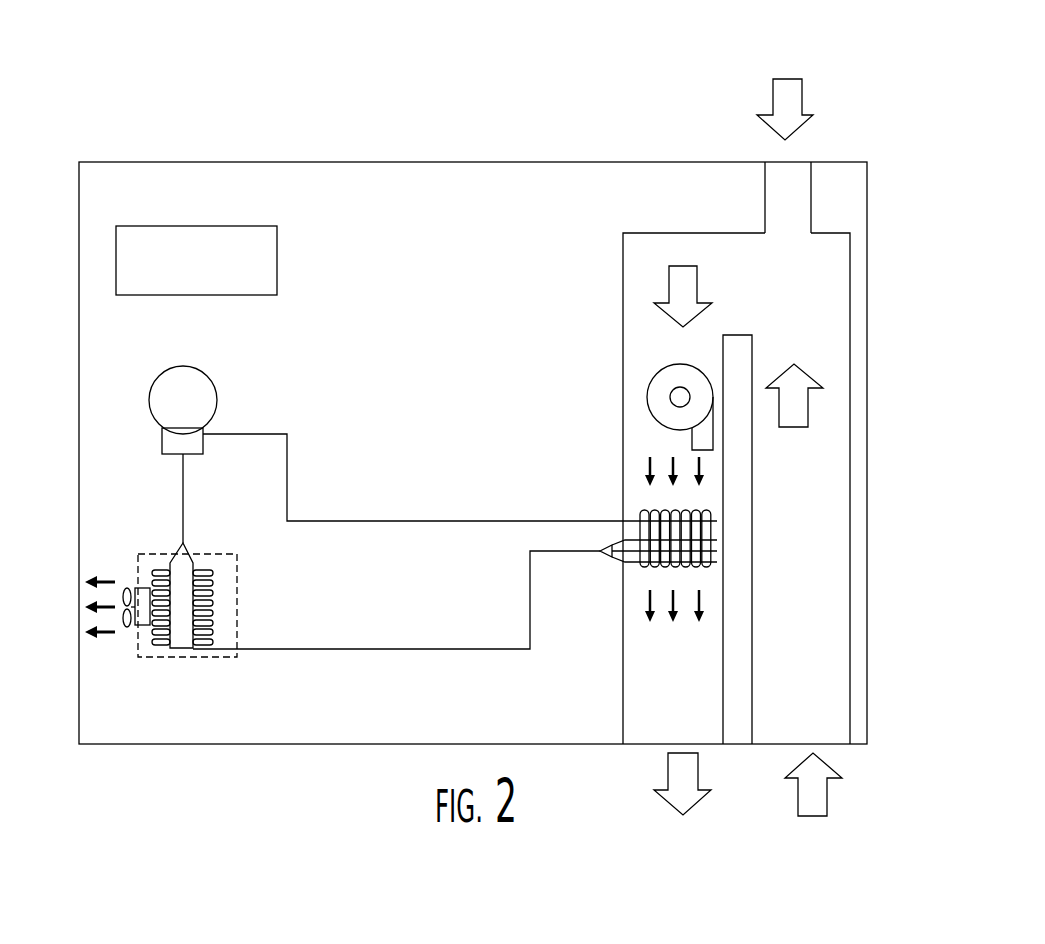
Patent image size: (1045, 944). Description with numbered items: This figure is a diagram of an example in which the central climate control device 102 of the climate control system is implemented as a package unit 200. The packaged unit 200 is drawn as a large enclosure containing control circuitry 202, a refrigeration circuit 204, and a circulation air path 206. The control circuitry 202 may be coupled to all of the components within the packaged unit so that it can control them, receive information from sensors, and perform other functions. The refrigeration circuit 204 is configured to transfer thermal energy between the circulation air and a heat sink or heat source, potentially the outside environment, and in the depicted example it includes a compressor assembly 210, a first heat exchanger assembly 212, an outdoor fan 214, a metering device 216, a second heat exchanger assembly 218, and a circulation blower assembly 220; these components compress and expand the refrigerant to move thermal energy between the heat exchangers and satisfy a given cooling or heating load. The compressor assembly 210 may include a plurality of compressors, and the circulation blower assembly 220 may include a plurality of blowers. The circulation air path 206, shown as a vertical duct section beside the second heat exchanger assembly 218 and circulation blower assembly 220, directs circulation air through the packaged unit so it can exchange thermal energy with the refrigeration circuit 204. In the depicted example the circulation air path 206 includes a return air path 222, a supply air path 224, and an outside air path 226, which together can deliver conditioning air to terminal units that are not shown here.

The central climate control device 102 is at (506, 46).
The package unit 200 is at (545, 191).
The control circuitry 202 is at (252, 278).
The refrigeration circuit 204 is at (388, 568).
The circulation air path 206 is at (806, 283).
The compressor assembly 210 is at (259, 401).
The first heat exchanger assembly 212 is at (207, 693).
The outdoor fan 214 is at (130, 585).
The metering device 216 is at (598, 552).
The second heat exchanger assembly 218 is at (643, 510).
The circulation blower assembly 220 is at (647, 402).
The return air path 222 is at (774, 762).
The supply air path 224 is at (631, 762).
The outside air path 226 is at (794, 150).